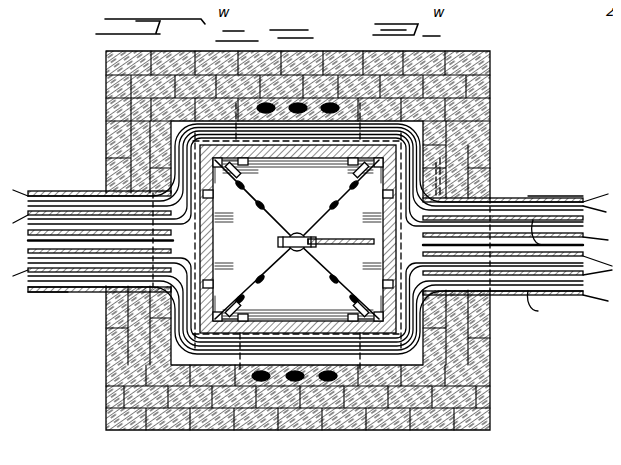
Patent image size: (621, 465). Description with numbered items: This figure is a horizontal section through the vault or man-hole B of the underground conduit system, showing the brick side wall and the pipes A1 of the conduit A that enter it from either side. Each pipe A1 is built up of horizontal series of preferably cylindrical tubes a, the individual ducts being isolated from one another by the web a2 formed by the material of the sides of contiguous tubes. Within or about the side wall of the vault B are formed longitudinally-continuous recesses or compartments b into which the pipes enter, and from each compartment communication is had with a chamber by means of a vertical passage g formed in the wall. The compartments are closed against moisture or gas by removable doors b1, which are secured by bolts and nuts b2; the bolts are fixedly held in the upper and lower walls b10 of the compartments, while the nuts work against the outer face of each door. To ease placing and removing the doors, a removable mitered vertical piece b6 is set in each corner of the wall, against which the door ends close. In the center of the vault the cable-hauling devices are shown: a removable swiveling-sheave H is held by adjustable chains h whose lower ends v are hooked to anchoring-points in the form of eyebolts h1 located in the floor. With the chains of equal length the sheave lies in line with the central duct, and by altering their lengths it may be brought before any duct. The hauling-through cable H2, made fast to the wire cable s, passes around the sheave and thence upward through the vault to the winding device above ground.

The tubes a is at (578, 287).
The web a2 is at (528, 269).
The wire cable s is at (552, 288).
The conduit A is at (72, 285).
The pipe A1 is at (525, 192).
The compartments b is at (305, 236).
The removable door b1 is at (310, 182).
The bolts and nuts b2 is at (207, 262).
The mitered vertical piece b6 is at (368, 160).
The upper and lower walls b10 is at (441, 173).
The vault B is at (298, 239).
The chains h is at (310, 262).
The eyebolts h1 is at (328, 196).
The swiveling-sheave H is at (302, 240).
The hauling-through cable H2 is at (349, 218).
The lower ends of chains v is at (350, 296).
The vertical passage g is at (321, 373).